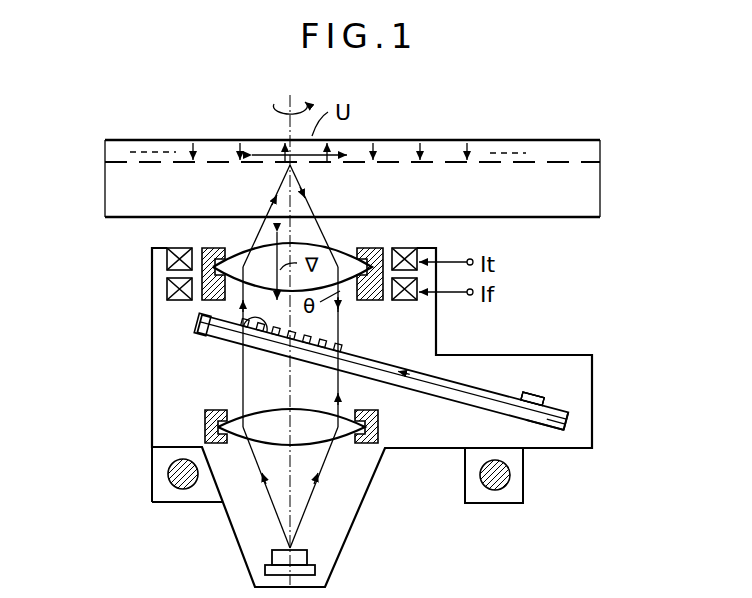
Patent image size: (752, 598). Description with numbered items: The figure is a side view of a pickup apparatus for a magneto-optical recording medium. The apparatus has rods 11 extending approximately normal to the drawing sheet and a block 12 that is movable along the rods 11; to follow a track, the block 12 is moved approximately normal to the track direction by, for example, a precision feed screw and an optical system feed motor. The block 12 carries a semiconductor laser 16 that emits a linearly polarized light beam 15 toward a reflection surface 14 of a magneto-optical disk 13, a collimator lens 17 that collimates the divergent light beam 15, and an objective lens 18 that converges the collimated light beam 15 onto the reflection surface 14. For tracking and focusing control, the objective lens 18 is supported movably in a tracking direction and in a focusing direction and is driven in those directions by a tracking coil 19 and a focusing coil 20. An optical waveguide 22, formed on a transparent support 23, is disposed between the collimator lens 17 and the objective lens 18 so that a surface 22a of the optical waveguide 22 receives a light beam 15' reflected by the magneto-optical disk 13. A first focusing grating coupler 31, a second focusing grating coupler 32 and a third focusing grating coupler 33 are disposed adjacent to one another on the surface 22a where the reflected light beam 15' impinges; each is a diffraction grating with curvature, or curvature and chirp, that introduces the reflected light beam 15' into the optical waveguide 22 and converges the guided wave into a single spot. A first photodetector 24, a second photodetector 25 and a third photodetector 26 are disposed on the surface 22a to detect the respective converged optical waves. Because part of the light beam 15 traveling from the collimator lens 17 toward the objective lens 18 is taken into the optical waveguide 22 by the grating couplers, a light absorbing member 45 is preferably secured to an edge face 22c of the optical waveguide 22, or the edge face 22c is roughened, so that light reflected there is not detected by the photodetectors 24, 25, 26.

The rods 11 is at (169, 478).
The block 12 is at (514, 346).
The magneto-optical disk 13 is at (538, 132).
The reflection surface 14 is at (508, 165).
The light beam 15 is at (319, 356).
The reflected light beam 15' is at (389, 369).
The semiconductor laser 16 is at (308, 553).
The collimator lens 17 is at (233, 443).
The objective lens 18 is at (240, 248).
The tracking coil 19 is at (410, 248).
The focusing coil 20 is at (410, 302).
The optical waveguide 22 is at (457, 380).
The surface of the optical waveguide 22a is at (567, 411).
The edge face of the optical waveguide 22c is at (195, 326).
The transparent support 23 is at (556, 432).
The first photodetector 24 is at (540, 400).
The second photodetector 25 is at (532, 398).
The third photodetector 26 is at (532, 398).
The first focusing grating coupler 31 is at (243, 334).
The second focusing grating coupler 32 is at (299, 337).
The third focusing grating coupler 33 is at (330, 345).
The light absorbing member 45 is at (197, 318).